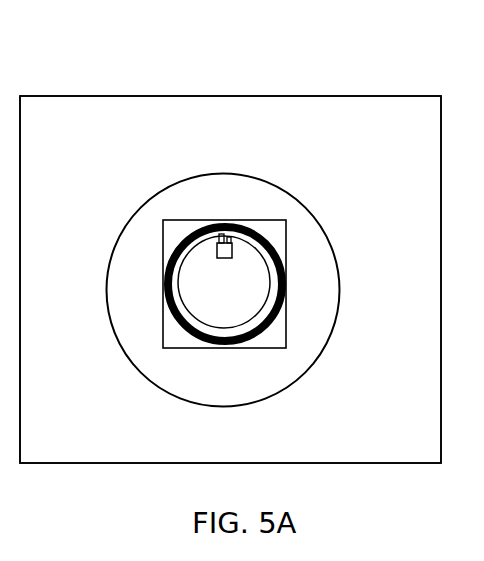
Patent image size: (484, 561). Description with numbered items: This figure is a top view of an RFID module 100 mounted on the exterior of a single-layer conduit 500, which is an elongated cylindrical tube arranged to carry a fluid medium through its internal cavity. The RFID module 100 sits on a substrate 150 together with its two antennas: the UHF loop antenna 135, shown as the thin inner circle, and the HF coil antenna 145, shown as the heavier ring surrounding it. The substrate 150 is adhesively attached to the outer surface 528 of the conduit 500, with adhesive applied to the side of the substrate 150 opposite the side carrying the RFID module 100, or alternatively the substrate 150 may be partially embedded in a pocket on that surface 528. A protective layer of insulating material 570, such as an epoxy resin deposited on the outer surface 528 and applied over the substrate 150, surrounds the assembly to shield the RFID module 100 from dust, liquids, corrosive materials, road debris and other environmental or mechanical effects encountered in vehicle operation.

The single-layer conduit 500 is at (326, 72).
The outer surface 528 is at (168, 120).
The protective layer of insulating material 570 is at (278, 192).
The substrate 150 is at (198, 221).
The HF coil antenna 145 is at (176, 313).
The UHF loop antenna 135 is at (262, 312).
The RFID module 100 is at (218, 255).